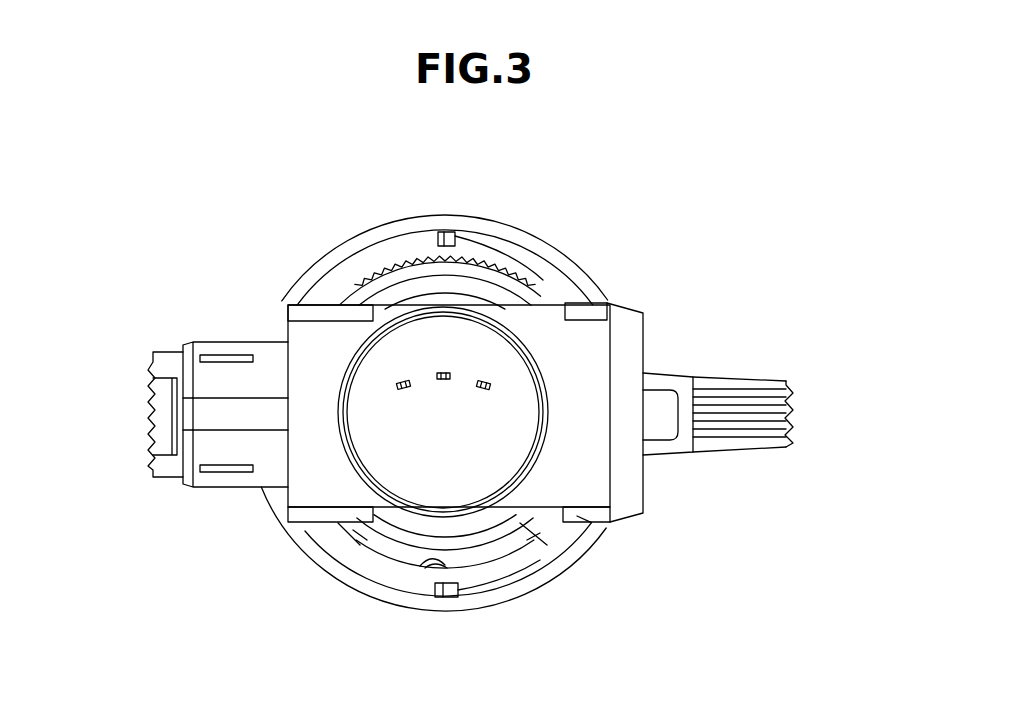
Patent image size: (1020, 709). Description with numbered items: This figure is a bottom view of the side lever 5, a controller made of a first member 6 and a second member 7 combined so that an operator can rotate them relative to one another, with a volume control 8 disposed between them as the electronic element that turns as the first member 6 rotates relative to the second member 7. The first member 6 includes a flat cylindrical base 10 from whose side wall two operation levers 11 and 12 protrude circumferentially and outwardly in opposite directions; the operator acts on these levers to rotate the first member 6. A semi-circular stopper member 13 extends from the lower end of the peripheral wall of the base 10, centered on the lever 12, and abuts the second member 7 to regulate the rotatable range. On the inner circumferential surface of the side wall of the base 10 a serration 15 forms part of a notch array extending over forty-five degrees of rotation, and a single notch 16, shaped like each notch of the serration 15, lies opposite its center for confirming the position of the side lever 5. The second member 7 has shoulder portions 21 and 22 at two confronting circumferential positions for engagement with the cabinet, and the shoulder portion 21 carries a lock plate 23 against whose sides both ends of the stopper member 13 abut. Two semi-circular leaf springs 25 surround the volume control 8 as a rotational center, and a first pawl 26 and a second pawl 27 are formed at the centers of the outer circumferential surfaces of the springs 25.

The side lever 5 is at (621, 241).
The first member 6 is at (447, 604).
The second member 7 is at (312, 353).
The volume control 8 is at (453, 433).
The cylindrical base 10 is at (592, 548).
The operation lever 11 is at (148, 408).
The operation lever 12 is at (798, 417).
The stopper member 13 is at (530, 247).
The serration 15 is at (373, 268).
The notch 16 is at (432, 572).
The shoulder portion 21 is at (183, 488).
The shoulder portion 22 is at (640, 517).
The lock plate 23 is at (300, 517).
The leaf spring 25 is at (478, 262).
The first pawl 26 is at (437, 232).
The second pawl 27 is at (423, 566).